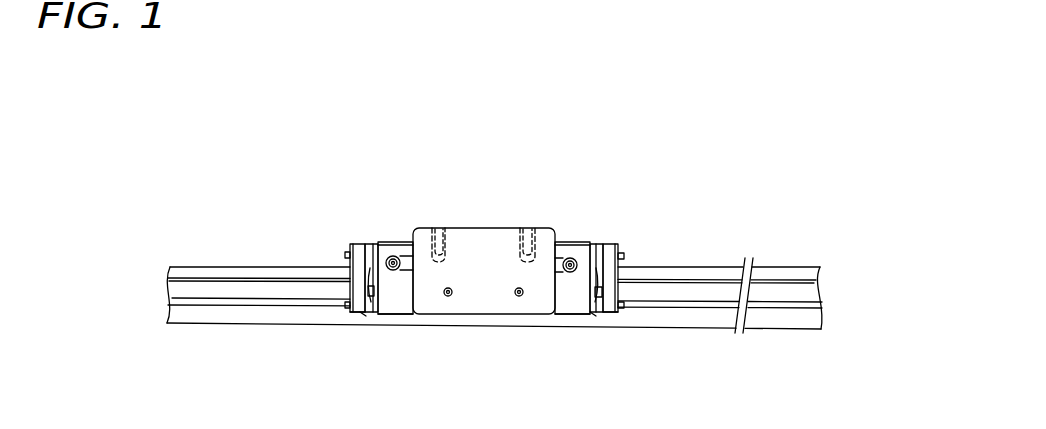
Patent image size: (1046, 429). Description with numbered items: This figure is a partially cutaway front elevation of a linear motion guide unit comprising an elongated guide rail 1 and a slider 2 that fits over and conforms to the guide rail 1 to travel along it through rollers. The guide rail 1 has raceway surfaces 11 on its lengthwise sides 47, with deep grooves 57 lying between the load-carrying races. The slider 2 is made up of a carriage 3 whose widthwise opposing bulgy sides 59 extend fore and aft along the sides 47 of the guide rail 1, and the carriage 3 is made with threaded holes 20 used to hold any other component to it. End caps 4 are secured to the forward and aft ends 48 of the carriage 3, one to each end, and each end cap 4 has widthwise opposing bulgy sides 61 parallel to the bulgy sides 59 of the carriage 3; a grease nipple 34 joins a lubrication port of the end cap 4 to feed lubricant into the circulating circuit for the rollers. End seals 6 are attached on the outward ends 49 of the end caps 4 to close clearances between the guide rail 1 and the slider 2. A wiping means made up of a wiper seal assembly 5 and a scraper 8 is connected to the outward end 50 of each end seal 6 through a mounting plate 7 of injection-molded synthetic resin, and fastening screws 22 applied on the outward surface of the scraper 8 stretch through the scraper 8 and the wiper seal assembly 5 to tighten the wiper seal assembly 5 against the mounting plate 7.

The guide rail 1 is at (684, 266).
The slider 2 is at (553, 223).
The carriage 3 is at (483, 242).
The end cap 4 is at (489, 277).
The wiper seal assembly 5 is at (353, 313).
The end seal 6 is at (370, 313).
The mounting plate 7 is at (490, 281).
The scraper 8 is at (351, 290).
The raceway surfaces 11 is at (714, 302).
The threaded holes 20 is at (525, 228).
The fastening screws 22 is at (348, 255).
The grease nipple 34 is at (397, 271).
The forward and aft ends 48 is at (562, 305).
The lengthwise sides 47 is at (240, 315).
The outward ends 49 is at (593, 310).
The outward end 50 is at (365, 315).
The deep grooves 57 is at (212, 290).
The bulgy sides 59 is at (481, 298).
The bulgy sides 61 is at (388, 314).